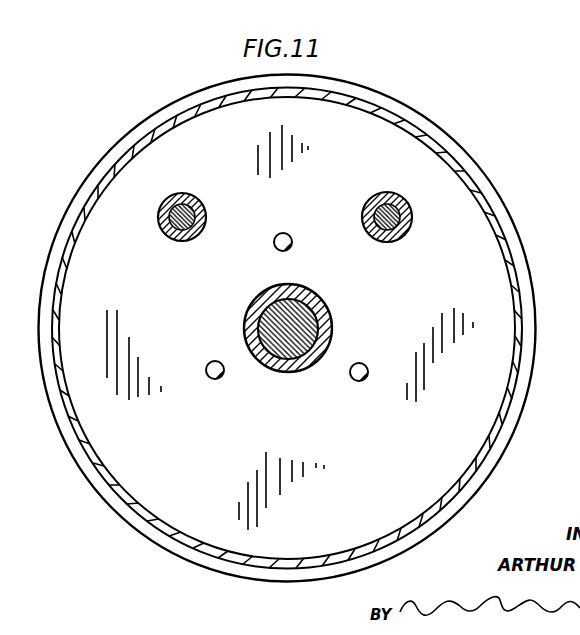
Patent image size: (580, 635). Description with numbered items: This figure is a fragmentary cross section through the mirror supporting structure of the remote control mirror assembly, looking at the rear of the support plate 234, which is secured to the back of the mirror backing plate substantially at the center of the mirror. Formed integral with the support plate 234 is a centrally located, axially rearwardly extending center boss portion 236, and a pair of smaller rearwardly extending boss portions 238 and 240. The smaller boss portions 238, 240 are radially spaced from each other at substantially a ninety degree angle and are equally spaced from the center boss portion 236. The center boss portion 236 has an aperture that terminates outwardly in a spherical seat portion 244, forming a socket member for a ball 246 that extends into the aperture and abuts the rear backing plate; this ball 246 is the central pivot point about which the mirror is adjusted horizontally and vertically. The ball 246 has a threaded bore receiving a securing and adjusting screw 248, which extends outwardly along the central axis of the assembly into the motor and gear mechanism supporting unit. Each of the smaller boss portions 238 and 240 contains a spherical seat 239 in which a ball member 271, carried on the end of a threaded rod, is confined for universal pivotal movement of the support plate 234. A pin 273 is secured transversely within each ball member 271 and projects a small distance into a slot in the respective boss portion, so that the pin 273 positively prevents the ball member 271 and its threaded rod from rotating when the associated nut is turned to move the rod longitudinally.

The support plate 234 is at (108, 198).
The center boss portion 236 is at (288, 343).
The smaller boss portion 238 is at (198, 203).
The spherical seat 239 is at (305, 211).
The smaller boss portion 240 is at (382, 170).
The spherical seat portion 244 is at (290, 358).
The ball 246 is at (305, 312).
The securing and adjusting screw 248 is at (267, 328).
The ball member 271 is at (167, 237).
The pin 273 is at (206, 220).